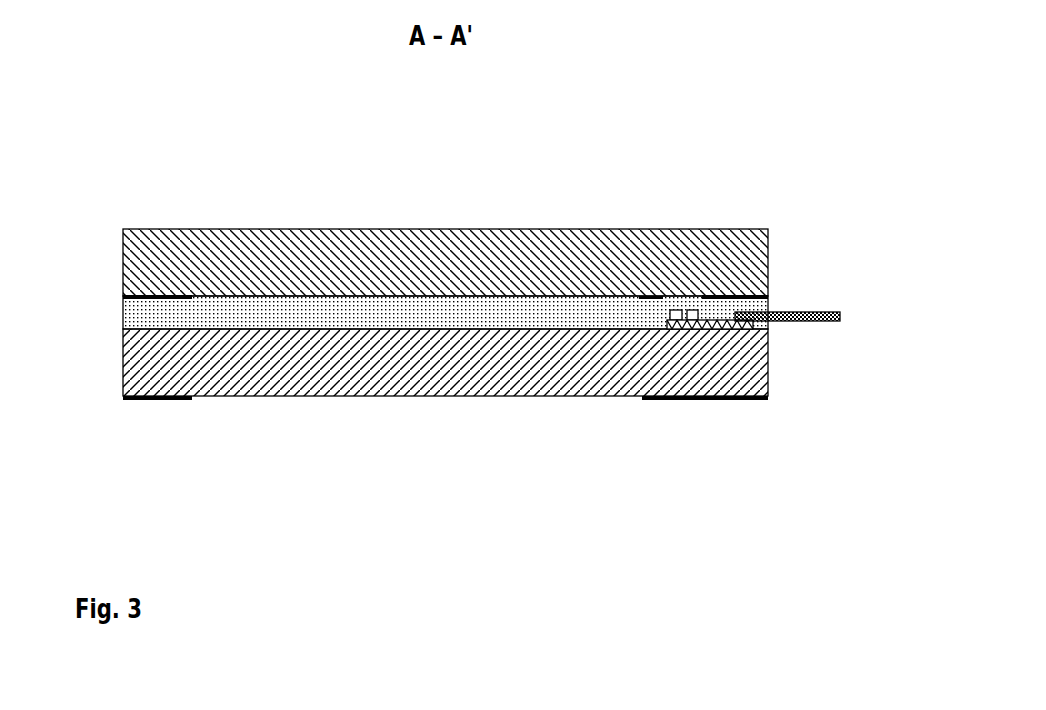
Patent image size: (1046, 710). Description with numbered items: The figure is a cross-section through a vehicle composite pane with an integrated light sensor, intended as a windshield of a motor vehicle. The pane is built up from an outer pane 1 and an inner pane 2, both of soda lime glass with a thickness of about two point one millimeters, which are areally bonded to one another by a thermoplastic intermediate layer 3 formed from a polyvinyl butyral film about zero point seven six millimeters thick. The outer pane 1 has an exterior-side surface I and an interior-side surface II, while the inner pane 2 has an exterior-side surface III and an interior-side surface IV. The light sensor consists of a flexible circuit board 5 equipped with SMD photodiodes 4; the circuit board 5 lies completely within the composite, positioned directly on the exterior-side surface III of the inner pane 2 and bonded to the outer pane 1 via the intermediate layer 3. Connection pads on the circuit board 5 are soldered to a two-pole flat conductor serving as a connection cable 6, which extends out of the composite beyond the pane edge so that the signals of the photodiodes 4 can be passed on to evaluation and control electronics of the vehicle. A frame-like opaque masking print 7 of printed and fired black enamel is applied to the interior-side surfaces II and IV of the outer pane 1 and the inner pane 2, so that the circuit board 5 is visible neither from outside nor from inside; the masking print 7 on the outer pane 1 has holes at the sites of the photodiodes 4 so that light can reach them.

The outer pane 1 is at (345, 247).
The inner pane 2 is at (391, 383).
The thermoplastic intermediate layer 3 is at (537, 306).
The SMD photodiodes 4 is at (698, 320).
The flexible circuit board 5 is at (737, 328).
The connection cable 6 is at (788, 311).
The masking print 7 is at (143, 296).
The exterior-side surface of the outer pane I is at (313, 228).
The interior-side surface of the outer pane II is at (263, 293).
The exterior-side surface of the inner pane III is at (295, 333).
The interior-side surface of the inner pane IV is at (328, 397).